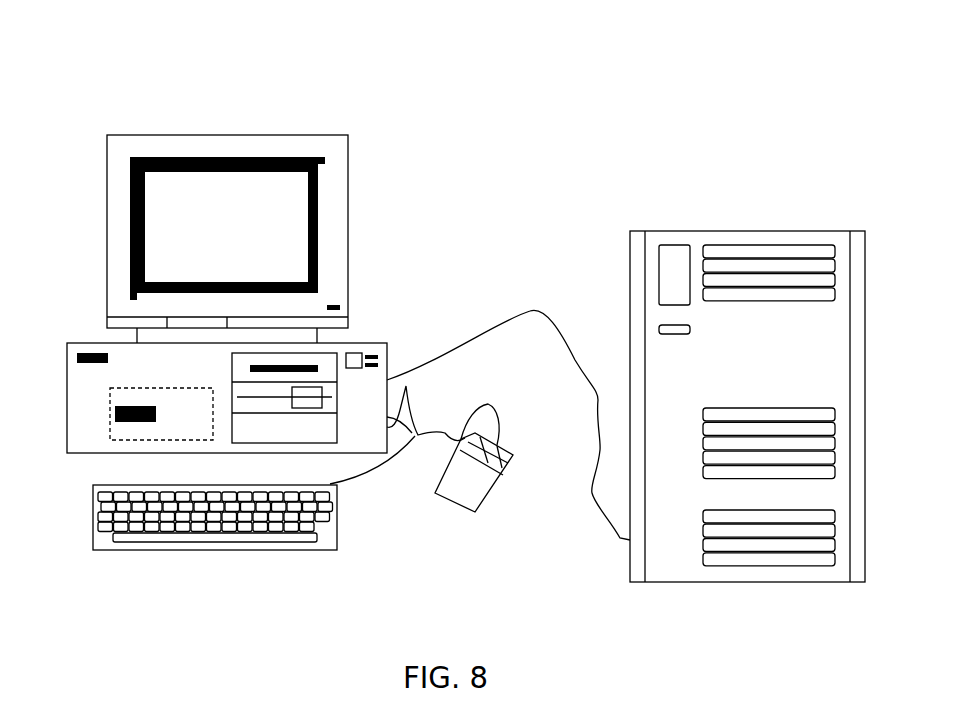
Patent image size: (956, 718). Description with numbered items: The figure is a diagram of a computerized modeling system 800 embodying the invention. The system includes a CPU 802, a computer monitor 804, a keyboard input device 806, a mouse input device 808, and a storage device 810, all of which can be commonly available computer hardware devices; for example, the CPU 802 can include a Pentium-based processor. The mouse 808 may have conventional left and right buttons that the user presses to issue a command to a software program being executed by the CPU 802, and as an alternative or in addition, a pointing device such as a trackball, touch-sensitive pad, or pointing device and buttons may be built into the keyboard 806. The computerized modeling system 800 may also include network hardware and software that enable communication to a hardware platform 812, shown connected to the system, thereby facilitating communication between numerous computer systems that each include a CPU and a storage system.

The computerized modeling system 800 is at (343, 95).
The CPU 802 is at (222, 384).
The computer monitor 804 is at (303, 223).
The keyboard input device 806 is at (93, 531).
The mouse input device 808 is at (468, 492).
The storage device 810 is at (315, 427).
The hardware platform 812 is at (688, 231).